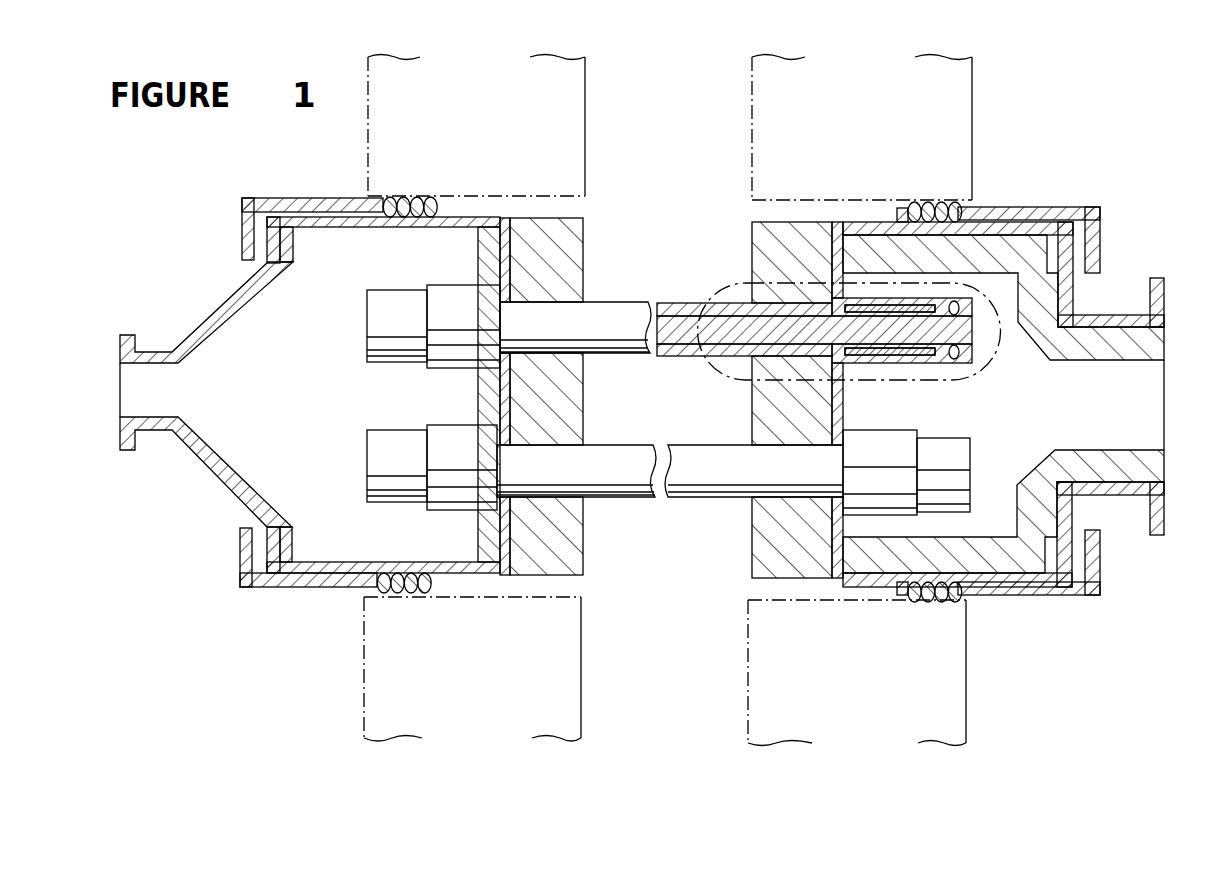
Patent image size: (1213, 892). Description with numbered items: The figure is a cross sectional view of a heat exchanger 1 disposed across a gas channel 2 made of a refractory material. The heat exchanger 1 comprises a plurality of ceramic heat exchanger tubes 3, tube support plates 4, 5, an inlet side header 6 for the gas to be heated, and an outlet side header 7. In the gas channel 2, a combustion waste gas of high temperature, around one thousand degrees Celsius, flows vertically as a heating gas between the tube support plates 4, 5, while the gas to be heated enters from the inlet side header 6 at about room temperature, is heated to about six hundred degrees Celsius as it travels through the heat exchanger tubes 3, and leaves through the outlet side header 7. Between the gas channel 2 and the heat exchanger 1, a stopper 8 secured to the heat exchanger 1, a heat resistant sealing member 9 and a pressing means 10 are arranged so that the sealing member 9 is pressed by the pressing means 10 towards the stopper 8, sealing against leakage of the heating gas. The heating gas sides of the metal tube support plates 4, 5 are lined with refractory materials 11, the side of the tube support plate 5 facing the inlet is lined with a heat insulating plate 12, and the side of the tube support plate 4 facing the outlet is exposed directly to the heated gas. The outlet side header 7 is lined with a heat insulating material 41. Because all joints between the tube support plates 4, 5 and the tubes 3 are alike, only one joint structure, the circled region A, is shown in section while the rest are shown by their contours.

The heat exchanger 1 is at (775, 374).
The gas channel 2 is at (940, 108).
The ceramic heat exchanger tubes 3 is at (697, 304).
The tube support plate 4 is at (836, 417).
The tube support plate 5 is at (512, 398).
The inlet side header 6 is at (207, 327).
The outlet side header 7 is at (1063, 292).
The stopper 8 is at (900, 207).
The heat resistant sealing member 9 is at (937, 200).
The pressing means 10 is at (1058, 213).
The refractory material 11 is at (548, 532).
The heat insulating plate 12 is at (478, 404).
The heat insulating material 41 is at (1113, 350).
The detail region A is at (720, 285).